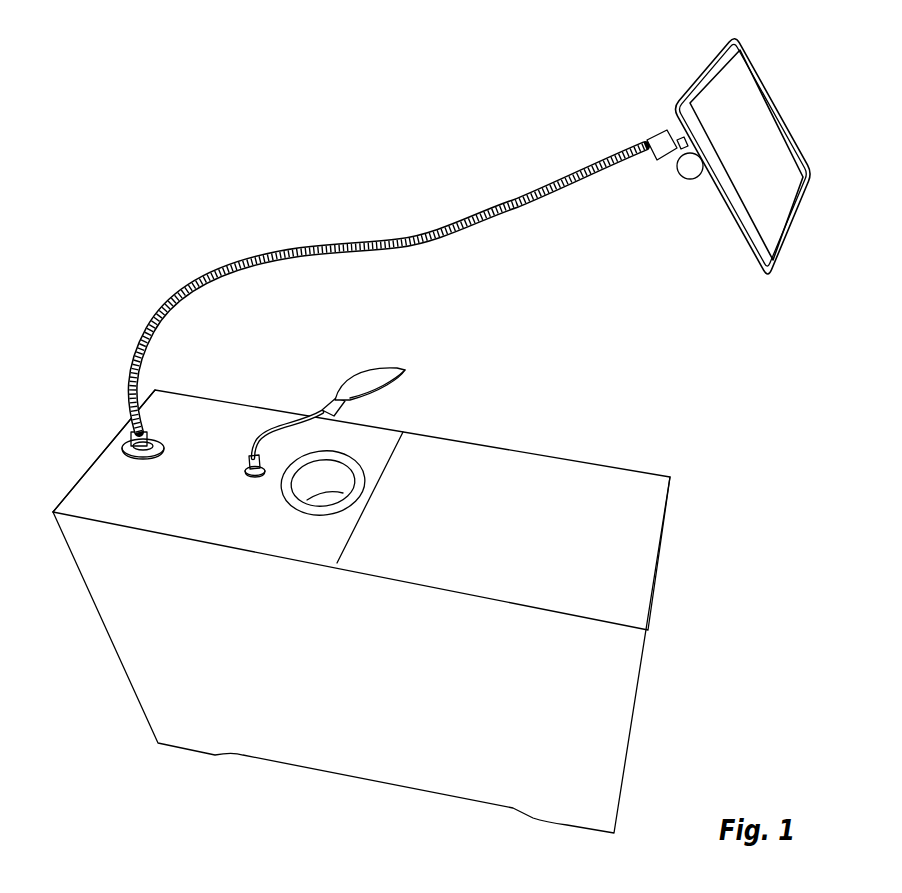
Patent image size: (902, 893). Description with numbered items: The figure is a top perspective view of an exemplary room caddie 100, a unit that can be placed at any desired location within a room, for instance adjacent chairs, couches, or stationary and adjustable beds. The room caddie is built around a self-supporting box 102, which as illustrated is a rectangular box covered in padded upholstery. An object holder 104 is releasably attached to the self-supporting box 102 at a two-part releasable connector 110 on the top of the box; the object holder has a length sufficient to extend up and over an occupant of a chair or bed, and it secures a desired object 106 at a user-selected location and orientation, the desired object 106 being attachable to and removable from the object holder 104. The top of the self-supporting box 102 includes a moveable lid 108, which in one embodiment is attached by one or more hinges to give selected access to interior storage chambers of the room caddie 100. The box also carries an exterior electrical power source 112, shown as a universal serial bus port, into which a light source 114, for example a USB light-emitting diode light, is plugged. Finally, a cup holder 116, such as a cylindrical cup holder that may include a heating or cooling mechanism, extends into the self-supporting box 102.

The room caddie 100 is at (751, 434).
The self-supporting box 102 is at (225, 399).
The object holder 104 is at (515, 203).
The desired object 106 is at (777, 95).
The moveable lid 108 is at (565, 470).
The two-part releasable connector 110 is at (120, 448).
The exterior electrical power source 112 is at (261, 483).
The light source 114 is at (363, 380).
The cup holder 116 is at (365, 474).